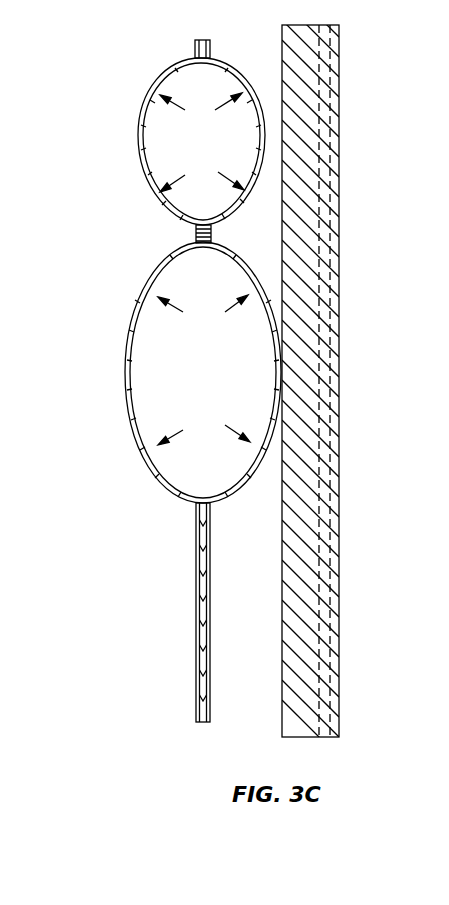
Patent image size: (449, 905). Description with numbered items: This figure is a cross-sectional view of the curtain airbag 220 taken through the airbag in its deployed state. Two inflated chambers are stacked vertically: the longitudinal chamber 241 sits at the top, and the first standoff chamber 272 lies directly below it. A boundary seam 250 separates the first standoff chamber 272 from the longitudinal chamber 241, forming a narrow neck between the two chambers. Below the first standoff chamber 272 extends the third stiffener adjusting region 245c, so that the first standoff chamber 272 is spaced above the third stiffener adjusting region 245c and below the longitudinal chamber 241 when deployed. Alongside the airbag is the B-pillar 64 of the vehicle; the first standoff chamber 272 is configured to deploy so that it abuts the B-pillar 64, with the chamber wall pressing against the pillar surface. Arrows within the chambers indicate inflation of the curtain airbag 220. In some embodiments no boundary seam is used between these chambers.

The B-pillar 64 is at (339, 81).
The curtain airbag 220 is at (110, 212).
The longitudinal chamber 241 is at (157, 84).
The boundary seam 250 is at (196, 233).
The first standoff chamber 272 is at (127, 345).
The third stiffener adjusting region 245c is at (196, 590).